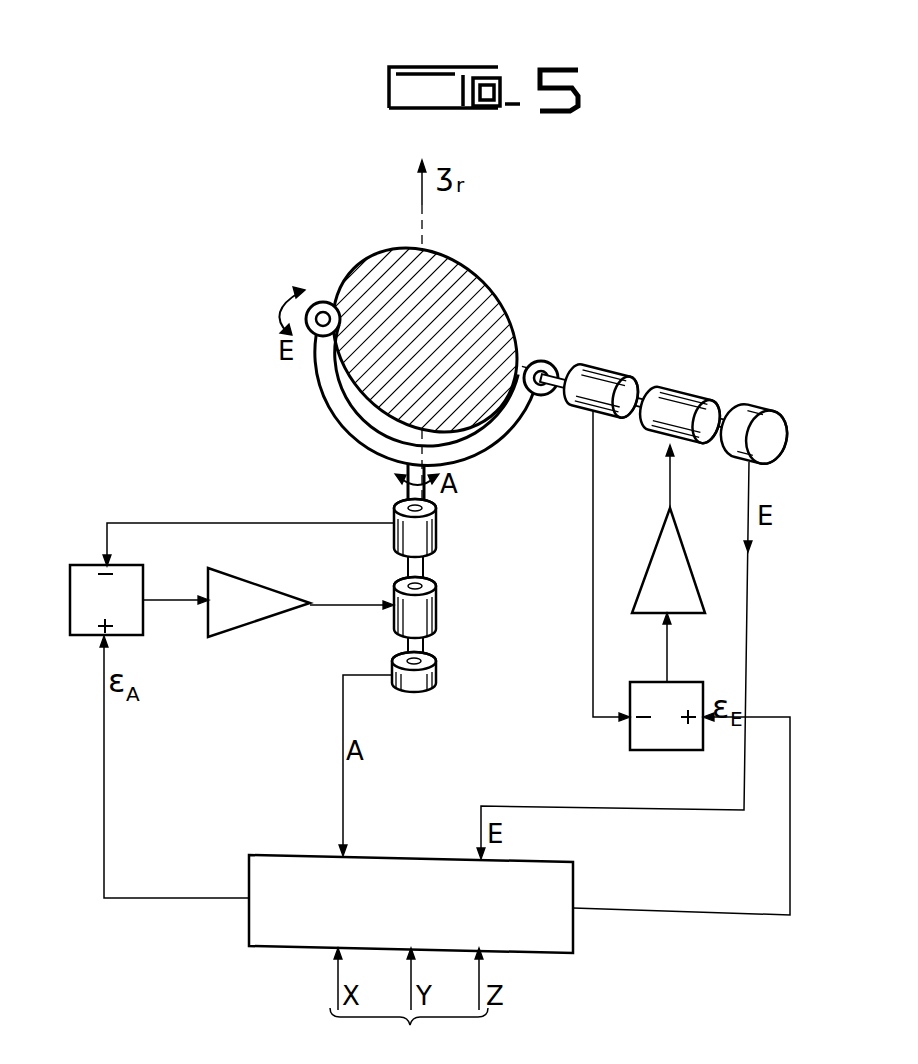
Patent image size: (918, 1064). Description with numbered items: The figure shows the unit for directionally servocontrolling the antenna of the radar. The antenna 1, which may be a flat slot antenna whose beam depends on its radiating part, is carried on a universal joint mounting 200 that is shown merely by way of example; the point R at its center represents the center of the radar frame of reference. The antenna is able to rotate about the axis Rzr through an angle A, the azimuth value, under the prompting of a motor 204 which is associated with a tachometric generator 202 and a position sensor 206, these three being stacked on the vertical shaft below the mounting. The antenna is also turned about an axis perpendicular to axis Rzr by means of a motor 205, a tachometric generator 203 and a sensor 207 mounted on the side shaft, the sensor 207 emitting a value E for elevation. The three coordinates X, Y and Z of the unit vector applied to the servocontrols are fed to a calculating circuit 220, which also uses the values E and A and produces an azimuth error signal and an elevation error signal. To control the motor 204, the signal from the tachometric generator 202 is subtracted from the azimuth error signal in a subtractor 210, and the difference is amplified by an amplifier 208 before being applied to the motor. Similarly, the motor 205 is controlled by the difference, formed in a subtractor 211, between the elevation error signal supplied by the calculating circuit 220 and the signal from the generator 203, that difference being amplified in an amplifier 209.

The antenna 1 is at (388, 253).
The gimbal mount (cradle support) 200 is at (405, 497).
The tachometric generator 202 is at (438, 536).
The tachometric generator 203 is at (612, 368).
The motor 204 is at (438, 616).
The motor 205 is at (690, 390).
The position sensor 206 is at (438, 680).
The sensor 207 is at (756, 406).
The amplifier 208 is at (283, 590).
The amplifier 209 is at (656, 549).
The subtractor 210 is at (130, 565).
The subtractor 211 is at (688, 752).
The calculating circuit 220 is at (276, 855).